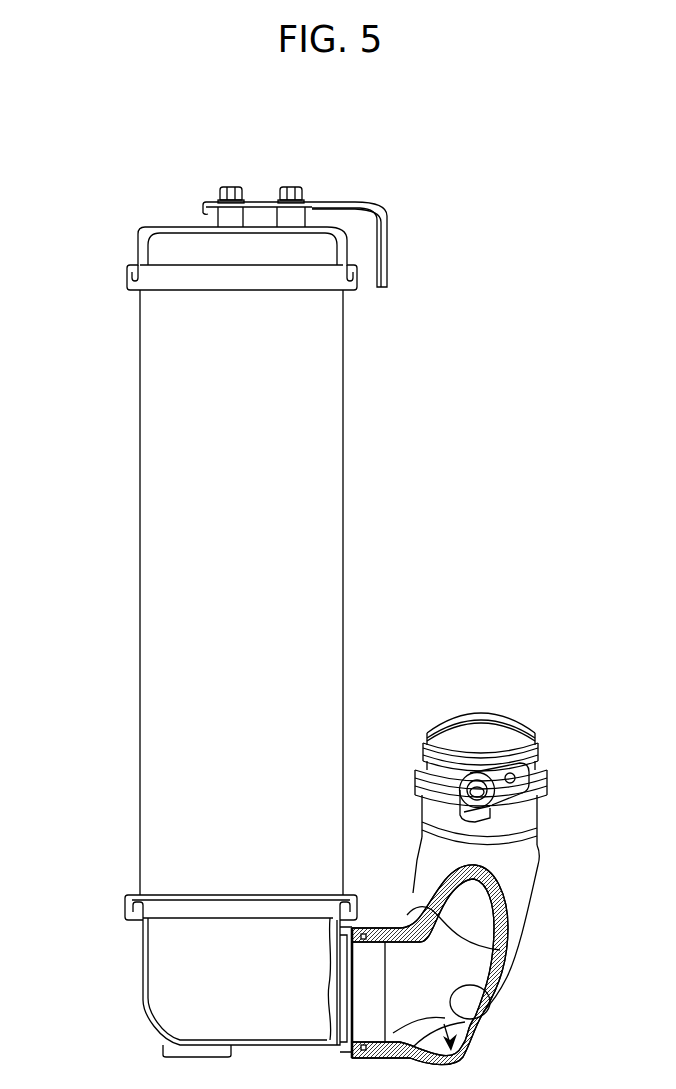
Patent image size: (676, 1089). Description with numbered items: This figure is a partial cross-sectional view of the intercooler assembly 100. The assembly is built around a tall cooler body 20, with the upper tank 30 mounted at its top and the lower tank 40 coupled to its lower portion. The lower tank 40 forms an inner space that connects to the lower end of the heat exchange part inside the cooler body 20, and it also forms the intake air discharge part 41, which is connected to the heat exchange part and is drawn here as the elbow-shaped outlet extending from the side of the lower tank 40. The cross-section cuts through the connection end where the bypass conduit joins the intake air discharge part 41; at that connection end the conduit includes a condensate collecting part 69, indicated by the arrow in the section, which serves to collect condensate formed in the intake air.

The intercooler assembly 100 is at (235, 137).
The upper tank 30 is at (106, 272).
The cooler body 20 is at (120, 576).
The lower tank 40 is at (120, 958).
The intake air discharge part 41 is at (520, 872).
The condensate collecting part 69 is at (497, 987).